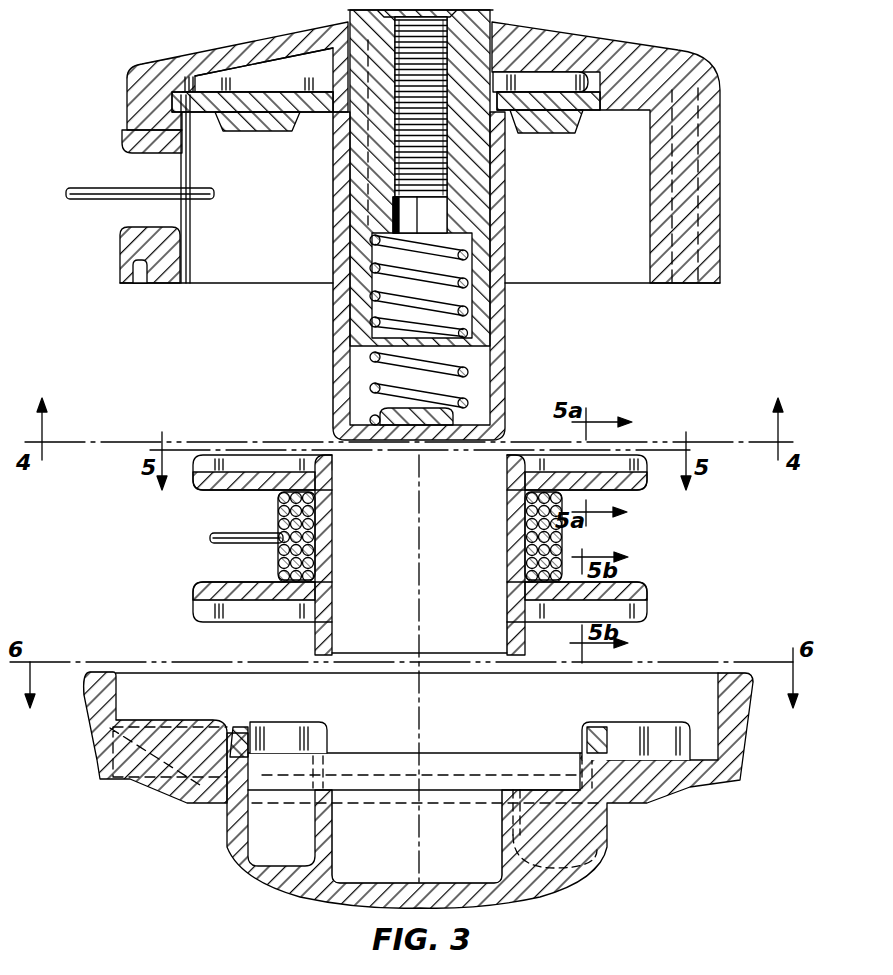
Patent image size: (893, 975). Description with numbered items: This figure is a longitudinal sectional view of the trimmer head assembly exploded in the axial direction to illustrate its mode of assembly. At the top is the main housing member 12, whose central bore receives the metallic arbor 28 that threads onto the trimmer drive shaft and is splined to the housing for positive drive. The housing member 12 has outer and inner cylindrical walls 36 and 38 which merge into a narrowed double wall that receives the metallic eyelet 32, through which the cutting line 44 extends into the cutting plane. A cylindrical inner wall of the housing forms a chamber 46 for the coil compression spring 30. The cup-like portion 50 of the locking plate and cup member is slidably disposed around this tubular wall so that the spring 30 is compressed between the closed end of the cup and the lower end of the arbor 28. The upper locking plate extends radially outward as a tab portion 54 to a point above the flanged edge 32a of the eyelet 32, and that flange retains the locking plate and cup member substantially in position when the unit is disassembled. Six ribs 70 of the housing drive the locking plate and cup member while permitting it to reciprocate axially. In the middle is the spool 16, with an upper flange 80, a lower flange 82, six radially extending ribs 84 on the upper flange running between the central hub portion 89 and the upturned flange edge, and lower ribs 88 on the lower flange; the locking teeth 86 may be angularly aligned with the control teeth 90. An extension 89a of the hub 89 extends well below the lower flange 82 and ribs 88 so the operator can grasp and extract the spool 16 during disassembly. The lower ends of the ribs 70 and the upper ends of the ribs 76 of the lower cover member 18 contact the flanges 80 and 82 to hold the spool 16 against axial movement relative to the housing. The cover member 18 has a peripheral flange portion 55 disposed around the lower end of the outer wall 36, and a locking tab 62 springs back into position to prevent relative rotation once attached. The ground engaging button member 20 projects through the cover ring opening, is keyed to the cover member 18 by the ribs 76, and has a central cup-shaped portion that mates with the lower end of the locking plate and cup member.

The main housing member 12 is at (345, 14).
The ribs 70 is at (250, 74).
The tab portion 54 is at (173, 101).
The flanged edge 32a is at (145, 118).
The eyelet 32 is at (152, 157).
The cutting line 44 is at (110, 200).
The locking teeth 86 is at (267, 131).
The arbor 28 is at (427, 163).
The outer cylindrical wall 36 is at (712, 175).
The inner cylindrical wall 38 is at (663, 245).
The chamber 46 is at (356, 297).
The cup-like portion 50 is at (338, 336).
The coil compression spring 30 is at (380, 367).
The spool 16 is at (230, 494).
The ribs 84 is at (527, 473).
The upper flange 80 is at (628, 490).
The central hub portion 89 is at (327, 553).
The lower flange 82 is at (630, 582).
The extension 89a is at (507, 633).
The lower ribs 88 is at (293, 620).
The ribs 76 is at (162, 743).
The control teeth 90 is at (257, 737).
The peripheral flange portion 55 is at (97, 718).
The lower cover member 18 is at (167, 787).
The locking tab 62 is at (335, 872).
The ground engaging button member 20 is at (312, 903).